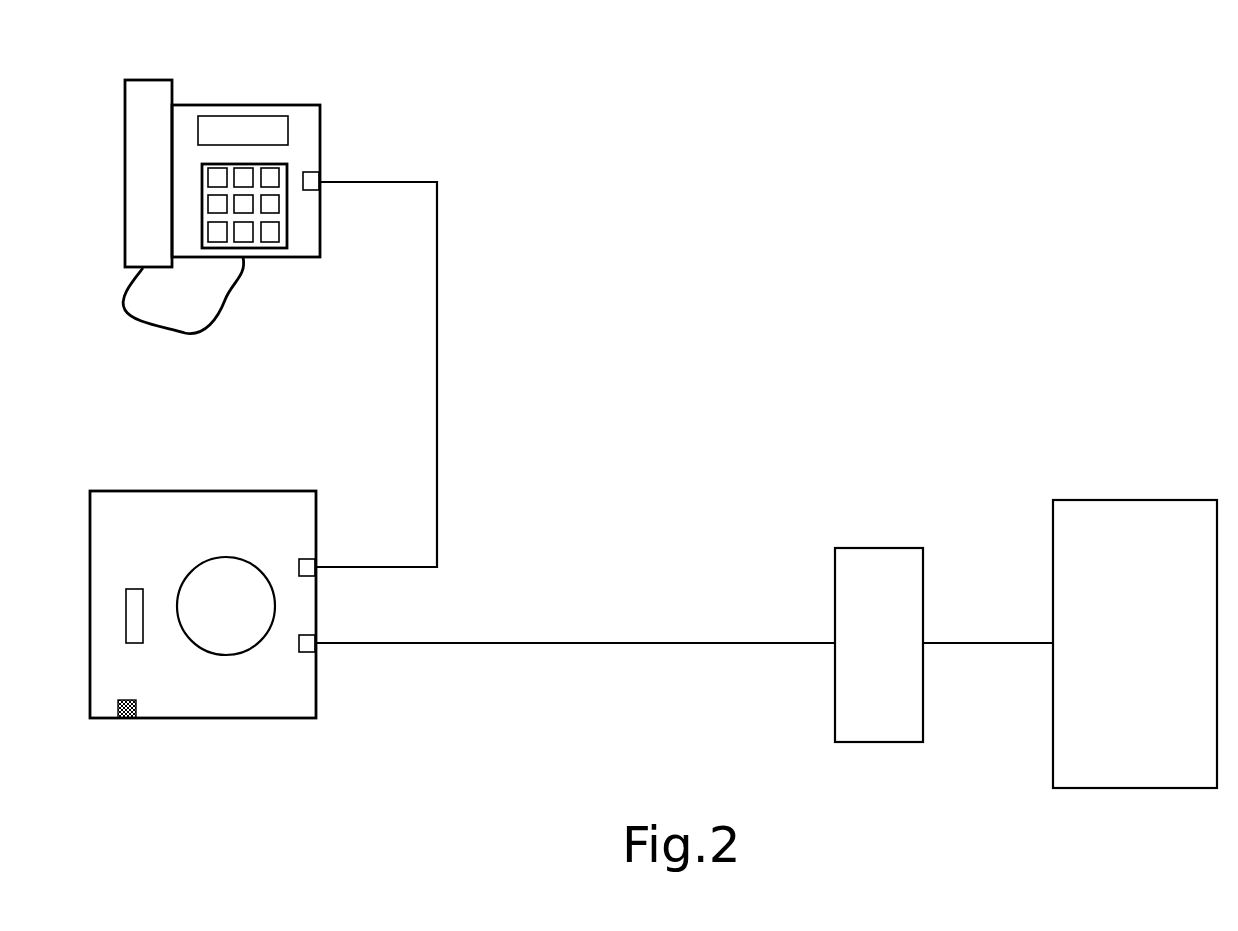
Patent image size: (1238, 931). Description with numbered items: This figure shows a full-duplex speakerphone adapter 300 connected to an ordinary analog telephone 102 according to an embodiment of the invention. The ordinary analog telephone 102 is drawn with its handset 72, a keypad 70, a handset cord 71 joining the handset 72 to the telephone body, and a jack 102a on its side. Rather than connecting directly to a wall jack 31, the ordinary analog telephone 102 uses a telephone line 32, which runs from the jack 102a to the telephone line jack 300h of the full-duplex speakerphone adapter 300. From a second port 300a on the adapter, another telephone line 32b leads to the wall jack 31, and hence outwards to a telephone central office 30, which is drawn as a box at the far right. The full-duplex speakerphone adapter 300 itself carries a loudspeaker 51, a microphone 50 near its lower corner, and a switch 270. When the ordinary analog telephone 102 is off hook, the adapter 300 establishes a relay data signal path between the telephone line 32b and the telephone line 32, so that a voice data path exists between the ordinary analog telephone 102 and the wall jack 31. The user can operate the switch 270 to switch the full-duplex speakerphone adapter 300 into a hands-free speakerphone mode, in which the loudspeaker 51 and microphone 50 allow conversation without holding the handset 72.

The ordinary analog telephone 102 is at (275, 105).
The handset 72 is at (150, 80).
The keypad 70 is at (268, 248).
The telephone jack 102a is at (315, 190).
The handset cord 71 is at (180, 334).
The telephone line 32 is at (437, 376).
The full-duplex speakerphone adapter 300 is at (277, 491).
The loudspeaker 51 is at (223, 557).
The switch 270 is at (126, 617).
The telephone line jack 300h is at (313, 555).
The line port 300a is at (312, 652).
The microphone 50 is at (128, 718).
The telephone line 32b is at (578, 643).
The wall jack 31 is at (885, 548).
The telephone central office 30 is at (1135, 500).